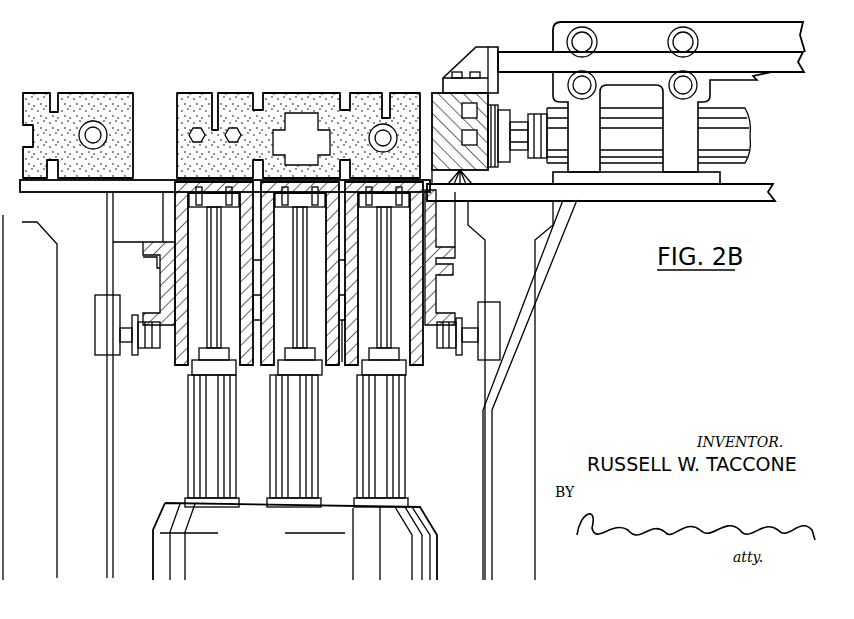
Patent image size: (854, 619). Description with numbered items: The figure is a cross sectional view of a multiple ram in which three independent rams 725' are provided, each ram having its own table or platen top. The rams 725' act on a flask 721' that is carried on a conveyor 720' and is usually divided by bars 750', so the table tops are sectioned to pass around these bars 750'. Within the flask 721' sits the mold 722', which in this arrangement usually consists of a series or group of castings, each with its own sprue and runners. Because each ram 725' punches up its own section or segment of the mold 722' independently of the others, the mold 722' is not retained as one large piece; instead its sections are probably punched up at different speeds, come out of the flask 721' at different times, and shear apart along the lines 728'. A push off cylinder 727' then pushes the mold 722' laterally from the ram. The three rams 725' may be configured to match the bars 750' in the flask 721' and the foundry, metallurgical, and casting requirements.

The shear lines 728' is at (221, 111).
The mold 722' is at (433, 112).
The push off cylinder 727' is at (656, 136).
The flask 721' is at (520, 385).
The conveyor 720' is at (526, 326).
The bars 750' is at (340, 340).
The rams 725' is at (407, 441).